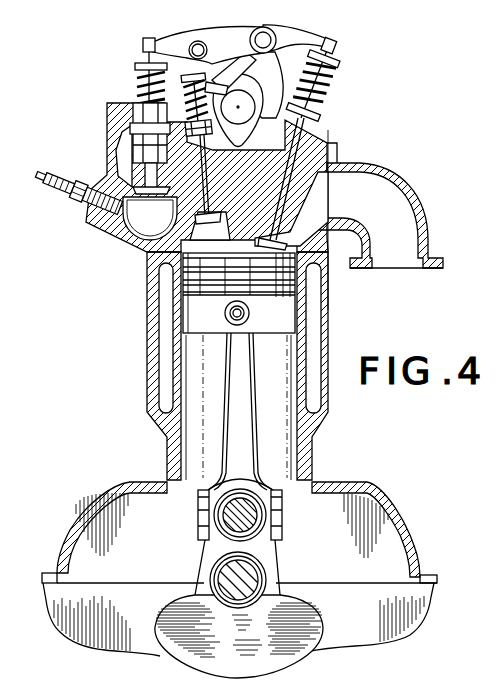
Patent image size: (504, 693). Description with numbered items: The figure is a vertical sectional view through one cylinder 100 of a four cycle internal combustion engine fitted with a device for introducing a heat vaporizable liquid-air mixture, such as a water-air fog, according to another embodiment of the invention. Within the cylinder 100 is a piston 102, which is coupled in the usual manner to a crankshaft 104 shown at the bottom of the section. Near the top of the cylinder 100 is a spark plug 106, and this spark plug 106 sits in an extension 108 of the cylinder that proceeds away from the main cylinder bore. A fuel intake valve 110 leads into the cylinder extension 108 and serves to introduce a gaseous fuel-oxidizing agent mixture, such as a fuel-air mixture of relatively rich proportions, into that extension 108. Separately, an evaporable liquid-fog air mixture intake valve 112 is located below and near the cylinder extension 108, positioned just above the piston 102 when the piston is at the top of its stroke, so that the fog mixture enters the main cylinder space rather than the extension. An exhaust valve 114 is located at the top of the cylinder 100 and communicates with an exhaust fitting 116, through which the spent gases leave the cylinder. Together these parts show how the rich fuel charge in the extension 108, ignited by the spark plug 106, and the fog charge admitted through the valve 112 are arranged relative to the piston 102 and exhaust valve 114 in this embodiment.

The cylinder 100 is at (300, 453).
The piston 102 is at (217, 327).
The crankshaft 104 is at (220, 577).
The spark plug 106 is at (78, 196).
The extension 108 is at (150, 218).
The fuel intake valve 110 is at (146, 186).
The evaporable liquid-fog air mixture intake valve 112 is at (209, 226).
The exhaust valve 114 is at (283, 200).
The exhaust manifold 116 is at (420, 194).